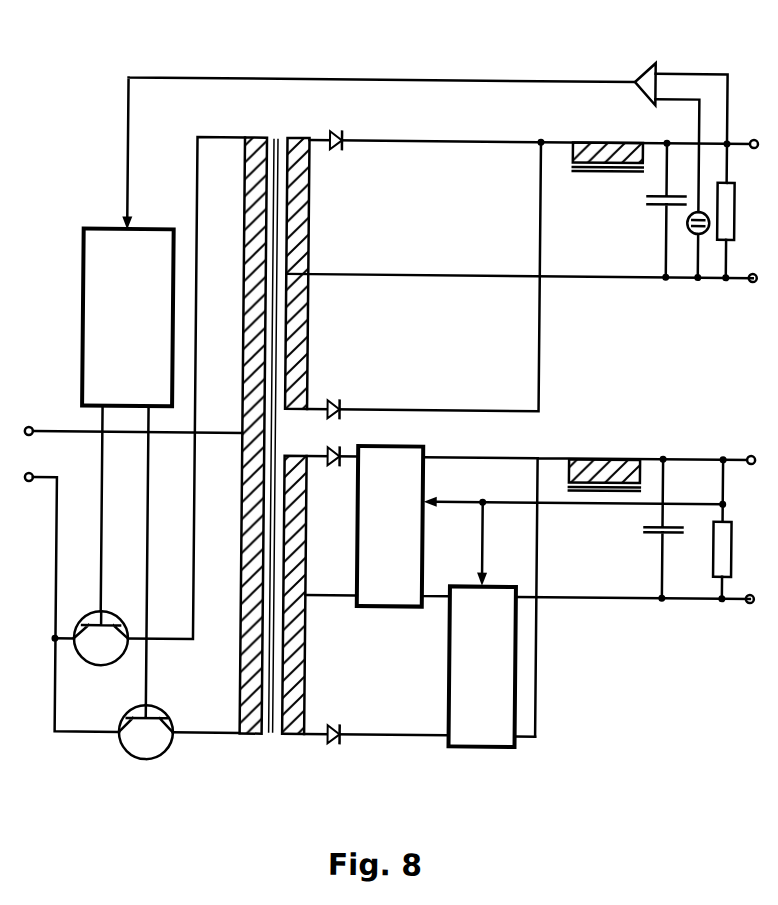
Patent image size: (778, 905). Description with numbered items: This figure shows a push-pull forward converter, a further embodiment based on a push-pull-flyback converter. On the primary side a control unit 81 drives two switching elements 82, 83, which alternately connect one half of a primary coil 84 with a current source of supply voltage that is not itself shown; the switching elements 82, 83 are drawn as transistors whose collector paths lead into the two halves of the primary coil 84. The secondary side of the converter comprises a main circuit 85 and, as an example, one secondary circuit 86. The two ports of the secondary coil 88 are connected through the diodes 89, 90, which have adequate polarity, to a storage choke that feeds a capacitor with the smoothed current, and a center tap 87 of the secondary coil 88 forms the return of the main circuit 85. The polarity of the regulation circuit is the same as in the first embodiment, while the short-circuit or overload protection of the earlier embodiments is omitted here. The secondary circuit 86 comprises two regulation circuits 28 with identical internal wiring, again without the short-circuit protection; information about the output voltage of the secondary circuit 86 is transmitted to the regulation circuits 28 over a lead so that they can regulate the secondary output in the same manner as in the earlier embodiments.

The regulation circuit 28 is at (388, 597).
The control unit 81 is at (125, 334).
The switching element 82 is at (104, 645).
The switching element 83 is at (148, 740).
The primary coil 84 is at (258, 137).
The main circuit 85 is at (530, 276).
The secondary circuit 86 is at (574, 542).
The center tap 87 is at (310, 272).
The secondary coil 88 is at (294, 137).
The diode 89 is at (340, 130).
The diode 90 is at (340, 405).